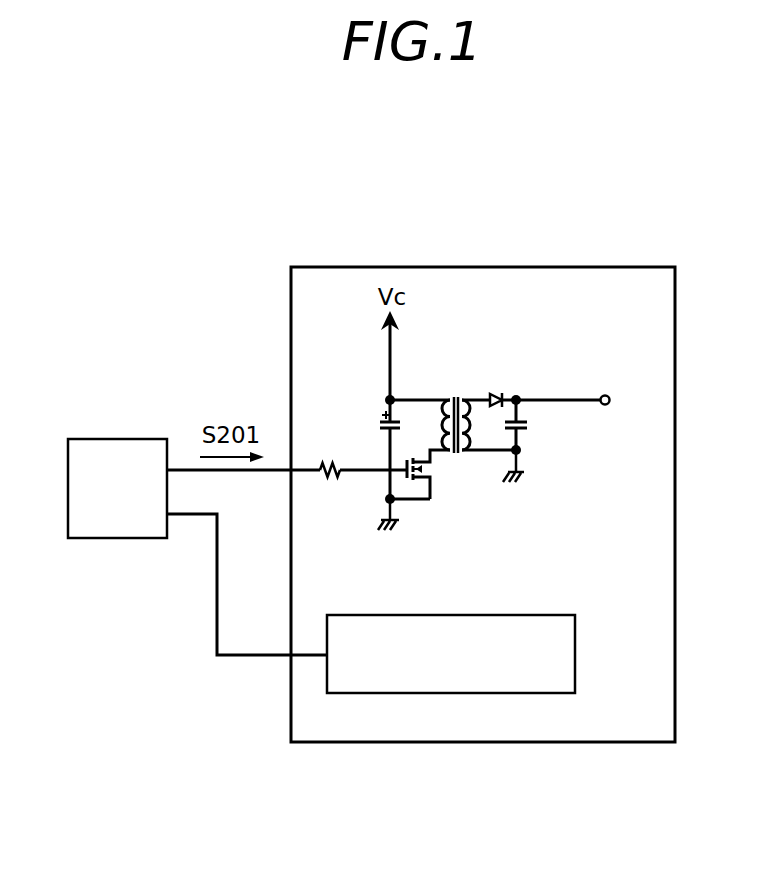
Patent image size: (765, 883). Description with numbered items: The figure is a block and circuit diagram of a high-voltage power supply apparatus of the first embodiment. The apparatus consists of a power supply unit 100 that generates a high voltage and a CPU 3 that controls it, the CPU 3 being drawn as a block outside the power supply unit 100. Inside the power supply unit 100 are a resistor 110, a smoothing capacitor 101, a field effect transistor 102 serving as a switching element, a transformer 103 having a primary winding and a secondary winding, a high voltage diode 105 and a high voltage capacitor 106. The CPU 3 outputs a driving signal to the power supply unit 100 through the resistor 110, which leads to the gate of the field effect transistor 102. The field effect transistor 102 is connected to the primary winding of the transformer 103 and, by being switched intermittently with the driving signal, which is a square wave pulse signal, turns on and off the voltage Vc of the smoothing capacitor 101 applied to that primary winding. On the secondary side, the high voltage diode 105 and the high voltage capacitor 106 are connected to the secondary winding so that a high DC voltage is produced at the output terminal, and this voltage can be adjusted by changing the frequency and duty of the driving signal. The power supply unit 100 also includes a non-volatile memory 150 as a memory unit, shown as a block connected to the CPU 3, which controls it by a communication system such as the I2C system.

The power supply unit 100 is at (563, 267).
The CPU 3 is at (108, 439).
The smoothing capacitor 101 is at (379, 425).
The field effect transistor 102 is at (440, 474).
The transformer 103 is at (455, 397).
The high voltage diode 105 is at (497, 395).
The high voltage capacitor 106 is at (534, 428).
The resistor 110 is at (330, 478).
The non-volatile memory 150 is at (378, 615).